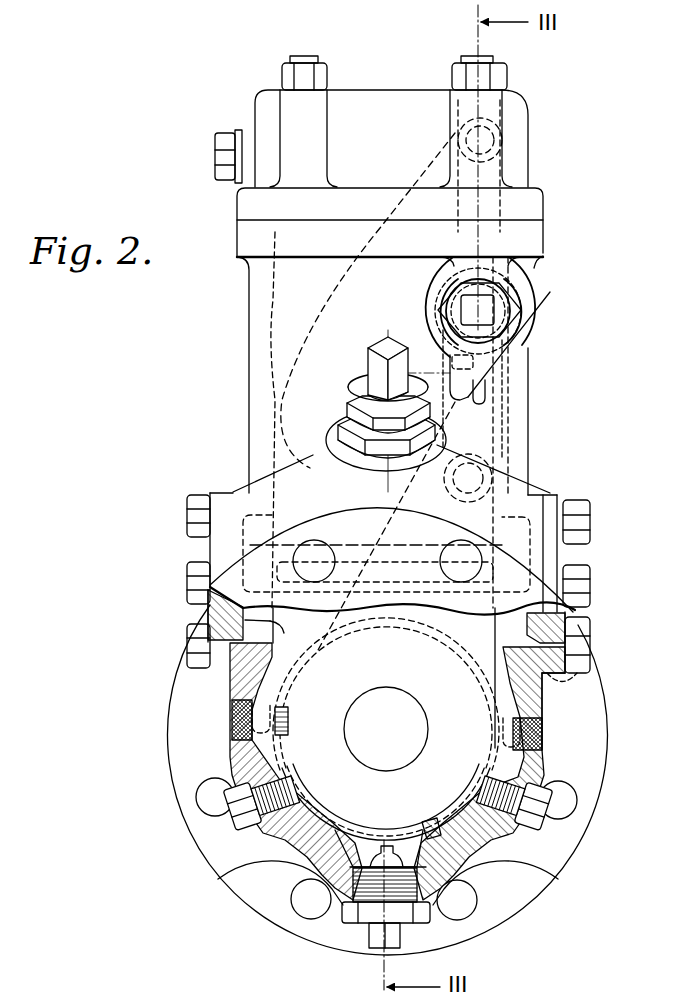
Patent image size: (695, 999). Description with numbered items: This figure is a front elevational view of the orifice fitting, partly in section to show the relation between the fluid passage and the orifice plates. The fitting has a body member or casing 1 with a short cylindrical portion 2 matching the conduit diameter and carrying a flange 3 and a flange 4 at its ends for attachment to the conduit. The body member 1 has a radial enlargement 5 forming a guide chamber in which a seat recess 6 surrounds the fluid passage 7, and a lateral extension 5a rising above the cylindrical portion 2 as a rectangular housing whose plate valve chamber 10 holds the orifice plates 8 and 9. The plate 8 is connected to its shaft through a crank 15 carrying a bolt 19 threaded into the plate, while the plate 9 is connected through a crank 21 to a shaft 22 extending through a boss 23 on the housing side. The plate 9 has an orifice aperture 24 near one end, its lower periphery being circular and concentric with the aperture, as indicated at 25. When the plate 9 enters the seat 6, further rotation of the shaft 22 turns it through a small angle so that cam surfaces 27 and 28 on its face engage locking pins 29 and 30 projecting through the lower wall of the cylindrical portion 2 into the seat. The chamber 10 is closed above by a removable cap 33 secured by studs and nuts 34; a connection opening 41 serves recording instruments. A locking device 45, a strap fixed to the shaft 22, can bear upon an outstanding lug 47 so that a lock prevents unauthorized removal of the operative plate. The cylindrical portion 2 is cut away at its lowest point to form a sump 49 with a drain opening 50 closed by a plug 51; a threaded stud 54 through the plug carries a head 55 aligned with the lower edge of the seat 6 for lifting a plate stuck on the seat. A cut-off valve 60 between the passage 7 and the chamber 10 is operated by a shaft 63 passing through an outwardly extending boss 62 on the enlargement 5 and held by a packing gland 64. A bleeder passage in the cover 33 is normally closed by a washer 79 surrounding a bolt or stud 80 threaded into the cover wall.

The body member 1 is at (245, 357).
The cylindrical portion 2 is at (544, 703).
The flange 3 is at (602, 731).
The flange 4 is at (335, 523).
The radial enlargement 5 is at (274, 866).
The lateral extension 5a is at (542, 243).
The seat recess 6 is at (312, 835).
The fluid passage 7 is at (458, 650).
The orifice plate 8 is at (345, 282).
The orifice plate 9 is at (330, 628).
The plate valve chamber 10 is at (210, 617).
The crank 15 is at (462, 207).
The bolt 19 is at (495, 142).
The crank 21 is at (485, 415).
The shaft 22 is at (490, 313).
The boss 23 is at (540, 310).
The orifice aperture 24 is at (352, 698).
The circular periphery 25 is at (286, 694).
The cam surface 27 is at (448, 826).
The cam surface 28 is at (286, 758).
The locking pin 29 is at (536, 822).
The locking pin 30 is at (250, 822).
The cap 33 is at (362, 102).
The studs and nuts 34 is at (290, 75).
The connection opening 41 is at (240, 704).
The locking device 45 is at (486, 392).
The outstanding lug 47 is at (480, 398).
The sump 49 is at (432, 846).
The drain opening 50 is at (422, 878).
The plug 51 is at (372, 922).
The threaded stud 54 is at (412, 932).
The head 55 is at (376, 845).
The cut-off valve 60 is at (366, 374).
The boss 62 is at (338, 426).
The shaft 63 is at (387, 340).
The packing gland 64 is at (348, 408).
The washer 79 is at (238, 131).
The bolt 80 is at (222, 138).